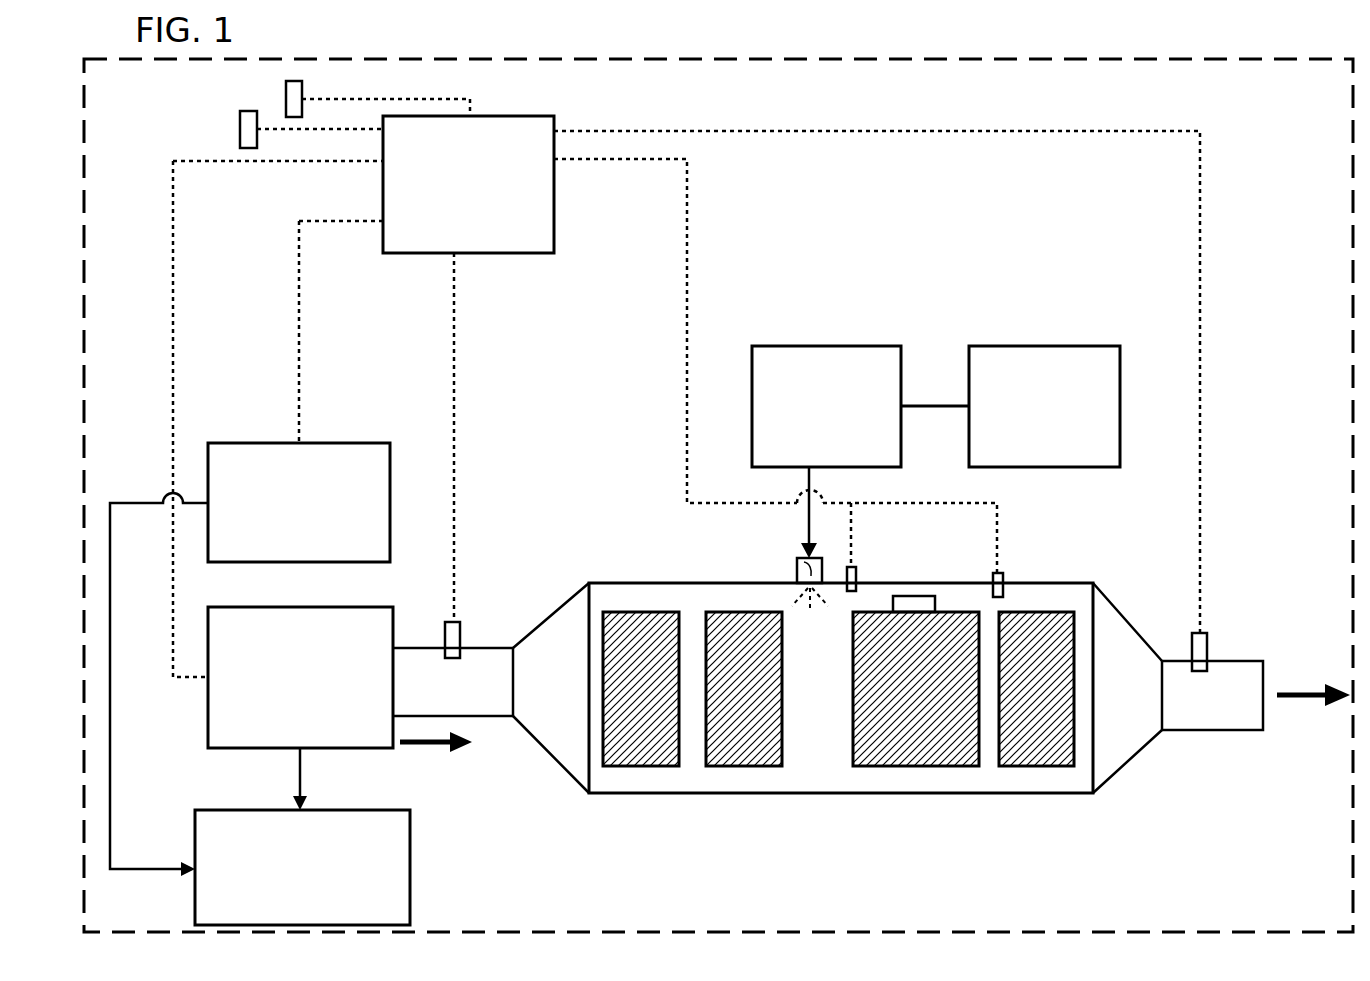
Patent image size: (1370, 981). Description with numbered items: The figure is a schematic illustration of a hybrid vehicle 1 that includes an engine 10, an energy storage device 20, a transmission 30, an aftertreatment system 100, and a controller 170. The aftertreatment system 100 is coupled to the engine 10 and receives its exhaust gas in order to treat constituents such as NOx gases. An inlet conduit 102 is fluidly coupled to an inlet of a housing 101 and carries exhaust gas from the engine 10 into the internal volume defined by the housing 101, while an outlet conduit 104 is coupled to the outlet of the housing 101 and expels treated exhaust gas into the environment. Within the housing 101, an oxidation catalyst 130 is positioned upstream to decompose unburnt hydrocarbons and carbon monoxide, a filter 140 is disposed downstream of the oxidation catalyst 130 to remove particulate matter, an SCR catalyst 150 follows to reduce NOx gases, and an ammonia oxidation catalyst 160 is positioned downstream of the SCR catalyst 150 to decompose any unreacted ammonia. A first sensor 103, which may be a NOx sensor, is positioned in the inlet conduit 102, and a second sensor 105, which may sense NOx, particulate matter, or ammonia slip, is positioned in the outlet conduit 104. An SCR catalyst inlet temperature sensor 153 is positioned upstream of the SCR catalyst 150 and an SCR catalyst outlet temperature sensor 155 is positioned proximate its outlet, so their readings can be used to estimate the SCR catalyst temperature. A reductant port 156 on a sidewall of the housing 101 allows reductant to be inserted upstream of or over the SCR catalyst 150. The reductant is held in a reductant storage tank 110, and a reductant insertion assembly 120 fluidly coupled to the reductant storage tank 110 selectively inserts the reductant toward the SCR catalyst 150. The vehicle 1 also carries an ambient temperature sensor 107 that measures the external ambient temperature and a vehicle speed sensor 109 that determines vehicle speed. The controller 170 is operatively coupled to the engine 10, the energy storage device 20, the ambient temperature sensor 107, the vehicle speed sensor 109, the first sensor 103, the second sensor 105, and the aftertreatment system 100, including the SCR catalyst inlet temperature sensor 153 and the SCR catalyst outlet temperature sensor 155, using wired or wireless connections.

The hybrid vehicle 1 is at (1168, 52).
The aftertreatment system 100 is at (1233, 152).
The ambient temperature sensor 107 is at (290, 93).
The vehicle speed sensor 109 is at (245, 126).
The controller 170 is at (450, 209).
The energy storage device 20 is at (286, 539).
The engine 10 is at (287, 703).
The transmission 30 is at (289, 894).
The inlet conduit 102 is at (500, 705).
The first sensor 103 is at (455, 637).
The housing 101 is at (757, 793).
The outlet conduit 104 is at (1228, 722).
The second sensor 105 is at (1203, 647).
The oxidation catalyst 130 is at (631, 755).
The filter 140 is at (735, 755).
The SCR catalyst 150 is at (884, 745).
The ammonia oxidation catalyst 160 is at (1028, 755).
The SCR catalyst inlet temperature sensor 153 is at (856, 575).
The SCR catalyst outlet temperature sensor 155 is at (1002, 580).
The reductant port 156 is at (800, 566).
The reductant insertion assembly 120 is at (807, 458).
The reductant storage tank 110 is at (1026, 458).